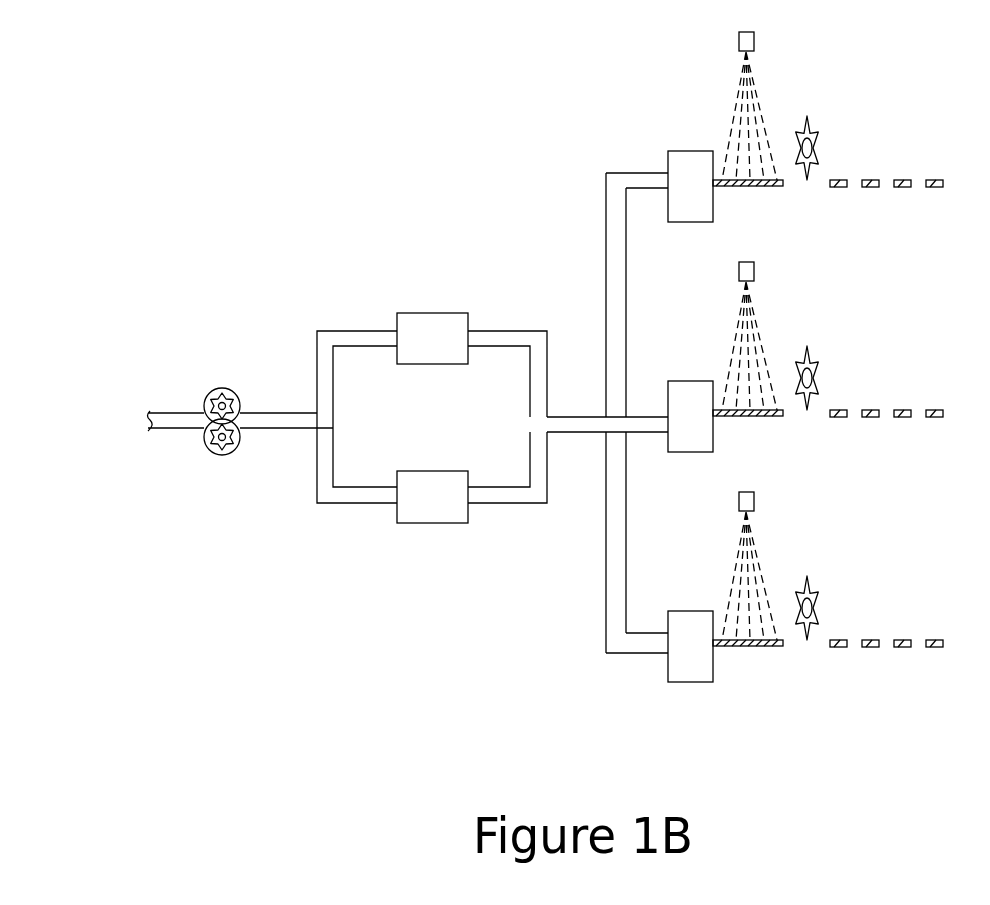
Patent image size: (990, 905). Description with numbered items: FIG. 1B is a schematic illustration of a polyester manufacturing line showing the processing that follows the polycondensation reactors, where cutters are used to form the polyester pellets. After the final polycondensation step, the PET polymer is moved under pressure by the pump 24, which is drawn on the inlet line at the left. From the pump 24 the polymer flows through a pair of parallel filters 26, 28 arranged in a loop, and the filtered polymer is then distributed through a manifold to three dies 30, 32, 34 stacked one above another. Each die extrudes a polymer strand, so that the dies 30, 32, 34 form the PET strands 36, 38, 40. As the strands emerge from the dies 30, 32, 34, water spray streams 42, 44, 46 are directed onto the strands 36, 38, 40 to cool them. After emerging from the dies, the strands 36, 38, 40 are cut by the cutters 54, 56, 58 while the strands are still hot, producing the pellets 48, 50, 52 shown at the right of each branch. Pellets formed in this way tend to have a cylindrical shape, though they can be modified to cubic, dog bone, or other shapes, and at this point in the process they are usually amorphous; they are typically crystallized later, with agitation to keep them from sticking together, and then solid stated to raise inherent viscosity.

The pump 24 is at (222, 388).
The filter 26 is at (435, 313).
The filter 28 is at (430, 523).
The die 30 is at (707, 200).
The die 32 is at (792, 428).
The die 34 is at (791, 660).
The PET strand 36 is at (772, 178).
The PET strand 38 is at (772, 340).
The PET strand 40 is at (772, 570).
The water spray stream 42 is at (740, 102).
The water spray stream 44 is at (724, 336).
The water spray stream 46 is at (724, 566).
The pellets 48 is at (930, 180).
The pellets 50 is at (886, 371).
The pellets 52 is at (886, 601).
The cutter 54 is at (810, 118).
The cutter 56 is at (847, 335).
The cutter 58 is at (847, 565).